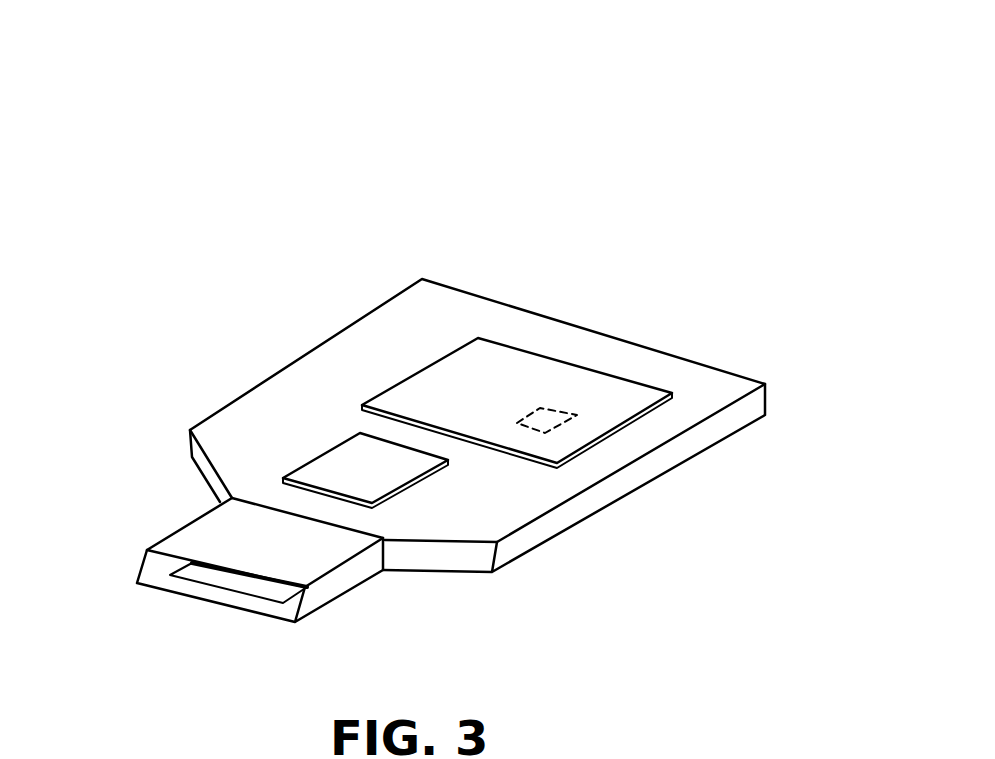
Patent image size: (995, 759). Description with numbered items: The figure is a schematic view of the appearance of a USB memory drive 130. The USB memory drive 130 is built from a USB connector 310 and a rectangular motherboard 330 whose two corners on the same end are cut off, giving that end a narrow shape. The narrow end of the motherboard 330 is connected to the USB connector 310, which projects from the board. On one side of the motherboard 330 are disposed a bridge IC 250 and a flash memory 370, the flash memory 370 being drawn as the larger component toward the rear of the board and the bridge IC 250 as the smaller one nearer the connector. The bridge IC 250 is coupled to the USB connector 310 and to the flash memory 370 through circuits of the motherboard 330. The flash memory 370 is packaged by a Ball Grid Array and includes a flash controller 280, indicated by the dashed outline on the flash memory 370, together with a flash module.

The USB memory drive 130 is at (545, 72).
The motherboard 330 is at (603, 502).
The USB connector 310 is at (140, 563).
The bridge IC 250 is at (327, 452).
The flash memory 370 is at (427, 365).
The flash controller 280 is at (532, 415).